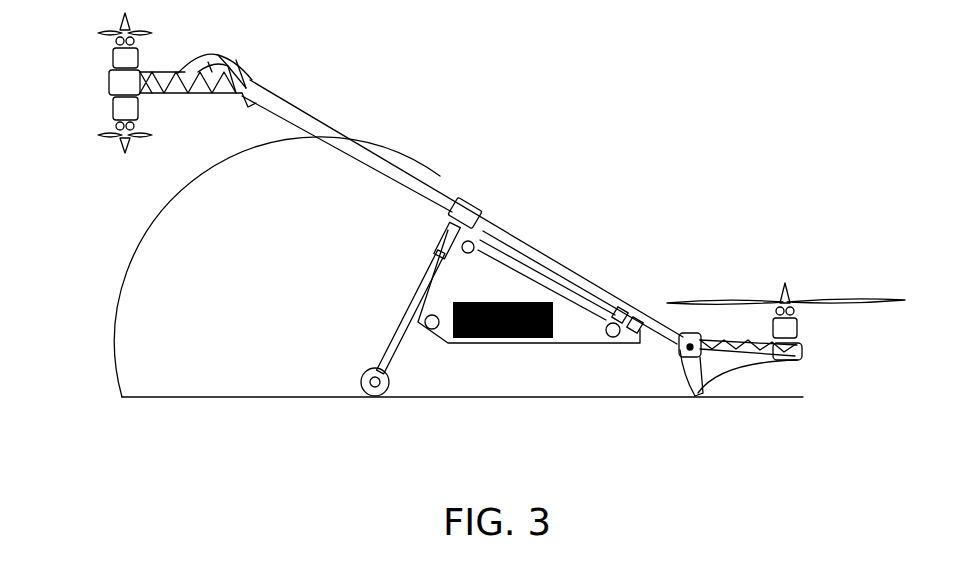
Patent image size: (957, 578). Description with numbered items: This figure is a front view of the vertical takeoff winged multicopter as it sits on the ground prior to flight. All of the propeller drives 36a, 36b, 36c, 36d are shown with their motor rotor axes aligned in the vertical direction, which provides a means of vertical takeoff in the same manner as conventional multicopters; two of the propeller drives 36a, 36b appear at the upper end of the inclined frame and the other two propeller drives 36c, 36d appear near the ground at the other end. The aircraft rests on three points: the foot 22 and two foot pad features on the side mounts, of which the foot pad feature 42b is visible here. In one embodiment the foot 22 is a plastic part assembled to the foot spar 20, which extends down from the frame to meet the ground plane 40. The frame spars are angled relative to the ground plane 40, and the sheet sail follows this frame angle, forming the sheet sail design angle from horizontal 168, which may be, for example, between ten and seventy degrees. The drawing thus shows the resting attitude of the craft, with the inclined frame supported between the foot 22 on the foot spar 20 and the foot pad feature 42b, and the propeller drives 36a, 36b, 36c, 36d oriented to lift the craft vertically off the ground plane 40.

The foot spar 20 is at (390, 338).
The foot 22 is at (370, 398).
The propeller drive 36a is at (108, 60).
The propeller drive 36b is at (108, 115).
The propeller drive 36c is at (797, 322).
The propeller drive 36d is at (805, 340).
The ground plane 40 is at (307, 395).
The foot pad feature 42b is at (700, 400).
The sheet sail design angle from horizontal 168 is at (158, 218).